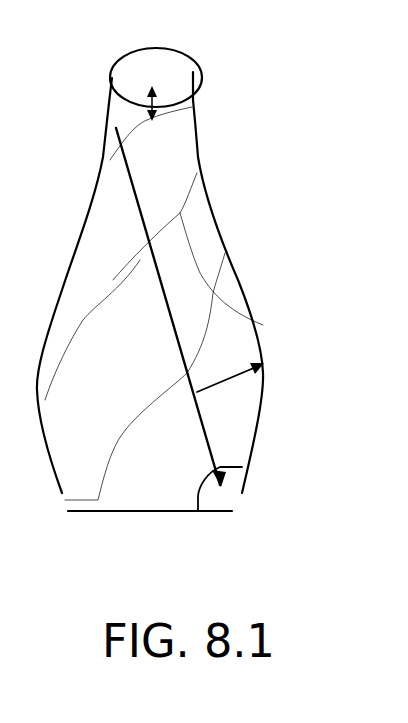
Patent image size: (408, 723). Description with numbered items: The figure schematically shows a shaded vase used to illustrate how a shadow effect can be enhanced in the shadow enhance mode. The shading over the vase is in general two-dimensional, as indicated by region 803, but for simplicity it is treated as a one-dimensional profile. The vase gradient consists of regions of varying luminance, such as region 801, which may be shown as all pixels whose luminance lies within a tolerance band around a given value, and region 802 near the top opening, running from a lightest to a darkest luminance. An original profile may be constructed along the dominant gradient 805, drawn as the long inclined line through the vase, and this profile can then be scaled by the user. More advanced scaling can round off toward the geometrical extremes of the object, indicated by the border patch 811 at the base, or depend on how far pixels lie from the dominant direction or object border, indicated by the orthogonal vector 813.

The region 801 is at (97, 246).
The region 802 is at (136, 70).
The region 803 is at (210, 228).
The dominant gradient 805 is at (163, 300).
The border patch 811 is at (223, 502).
The orthogonal vector 813 is at (218, 383).